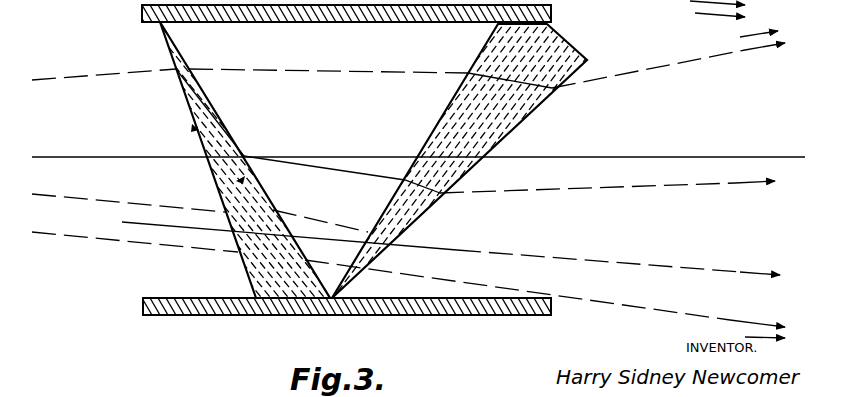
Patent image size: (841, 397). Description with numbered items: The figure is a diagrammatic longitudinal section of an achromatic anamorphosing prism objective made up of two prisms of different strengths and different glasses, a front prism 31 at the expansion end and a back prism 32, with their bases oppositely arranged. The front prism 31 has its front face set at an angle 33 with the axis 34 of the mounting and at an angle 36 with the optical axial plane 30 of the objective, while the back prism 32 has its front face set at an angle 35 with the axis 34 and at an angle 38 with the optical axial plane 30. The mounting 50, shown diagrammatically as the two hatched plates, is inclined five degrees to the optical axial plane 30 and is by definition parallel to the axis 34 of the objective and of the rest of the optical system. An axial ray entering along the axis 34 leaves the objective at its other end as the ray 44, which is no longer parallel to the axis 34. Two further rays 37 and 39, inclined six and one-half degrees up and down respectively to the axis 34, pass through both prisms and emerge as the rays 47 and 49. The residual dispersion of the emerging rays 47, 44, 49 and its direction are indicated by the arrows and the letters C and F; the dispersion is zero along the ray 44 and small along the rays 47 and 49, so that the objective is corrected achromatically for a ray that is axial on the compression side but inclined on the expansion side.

The optical axial plane 30 is at (179, 228).
The front prism 31 is at (450, 198).
The back prism 32 is at (337, 198).
The angle of front face of front prism with axis 33 is at (549, 155).
The axis of the mounting 34 is at (68, 157).
The angle of front face of back prism with axis 35 is at (197, 106).
The angle of front face of front prism with optical axial plane 36 is at (443, 205).
The upwardly inclined ray 37 is at (60, 81).
The angle of front face of back prism with optical axial plane 38 is at (220, 216).
The downwardly inclined ray 39 is at (68, 234).
The exiting axial ray 44 is at (690, 188).
The exiting upper ray 47 is at (706, 66).
The exiting lower ray 49 is at (708, 314).
The mounting 50 is at (552, 14).